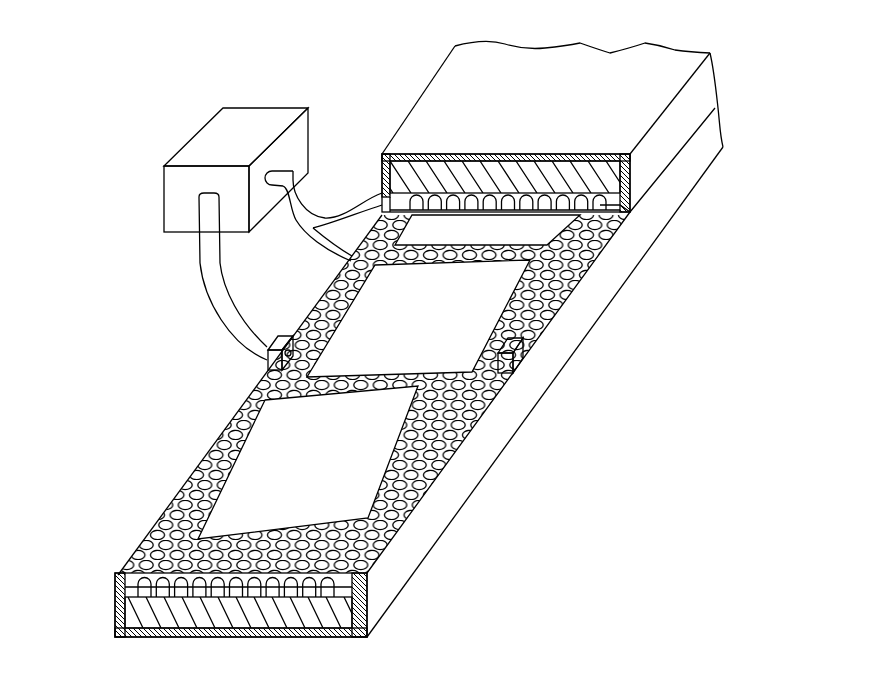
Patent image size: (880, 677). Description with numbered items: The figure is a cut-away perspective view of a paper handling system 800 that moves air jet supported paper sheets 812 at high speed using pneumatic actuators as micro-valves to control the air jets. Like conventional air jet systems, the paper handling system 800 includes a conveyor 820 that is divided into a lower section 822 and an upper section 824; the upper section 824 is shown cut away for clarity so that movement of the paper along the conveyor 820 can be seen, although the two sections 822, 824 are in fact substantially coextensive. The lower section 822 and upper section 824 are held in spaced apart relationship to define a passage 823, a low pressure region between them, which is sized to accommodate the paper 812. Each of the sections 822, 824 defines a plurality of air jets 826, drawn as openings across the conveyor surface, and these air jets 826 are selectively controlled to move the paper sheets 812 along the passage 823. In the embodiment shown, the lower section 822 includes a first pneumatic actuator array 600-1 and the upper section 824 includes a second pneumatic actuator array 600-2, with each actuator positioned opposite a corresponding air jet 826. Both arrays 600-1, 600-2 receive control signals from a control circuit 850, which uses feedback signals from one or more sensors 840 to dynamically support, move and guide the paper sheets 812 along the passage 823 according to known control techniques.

The paper handling system 800 is at (145, 90).
The control circuit 850 is at (184, 163).
The paper sheets 812 is at (355, 283).
The sensors 840 is at (267, 361).
The first pneumatic actuator array 600-1 is at (627, 200).
The second pneumatic actuator array 600-2 is at (132, 577).
The passage 823 is at (611, 217).
The upper section 824 is at (663, 153).
The lower section 822 is at (473, 467).
The conveyor 820 is at (419, 339).
The air jets 826 is at (335, 545).